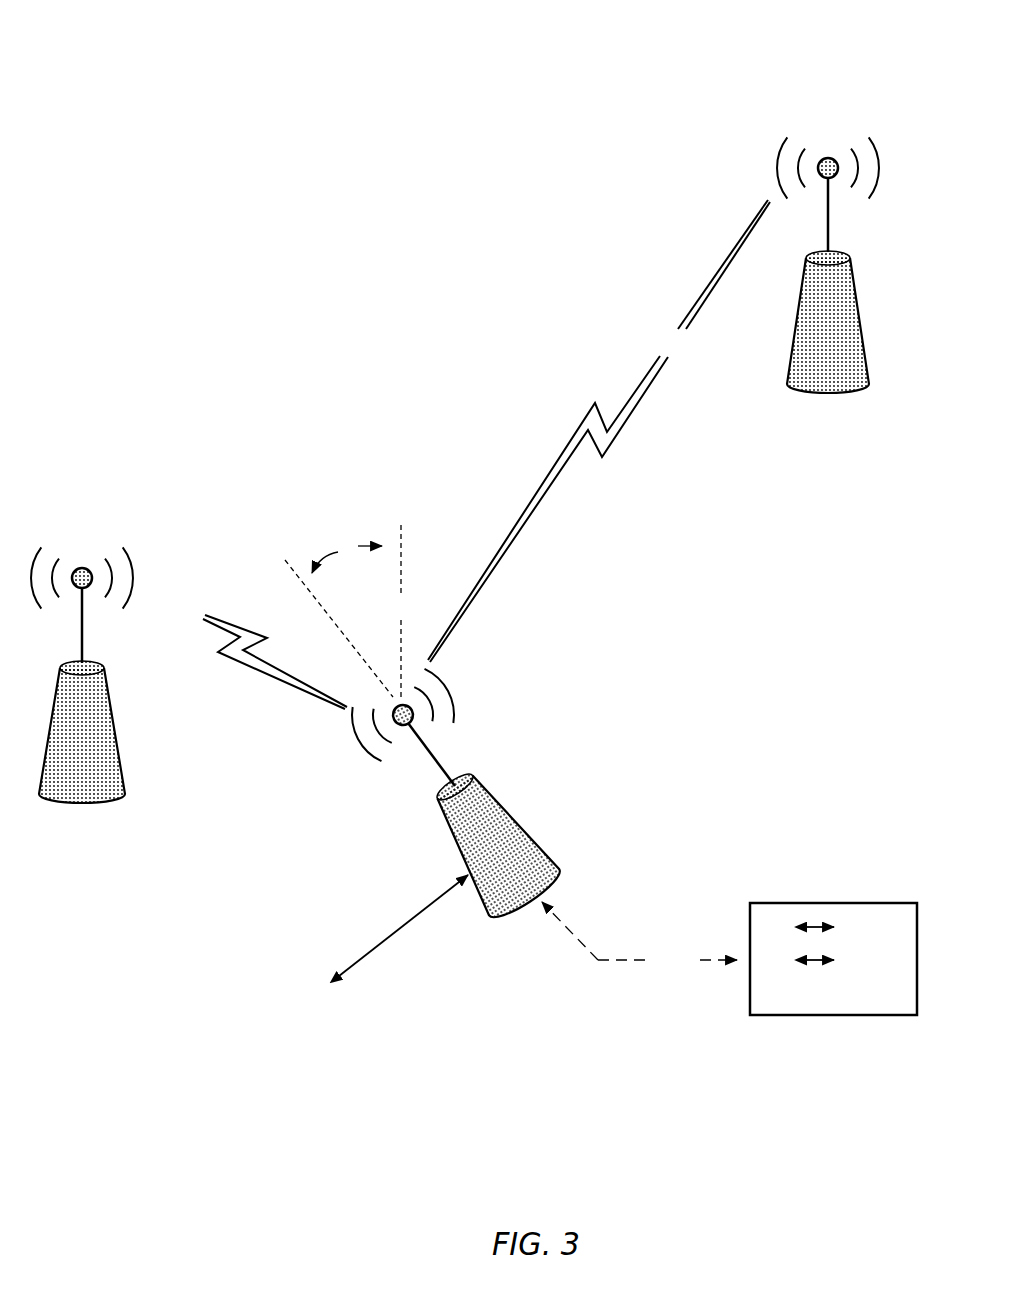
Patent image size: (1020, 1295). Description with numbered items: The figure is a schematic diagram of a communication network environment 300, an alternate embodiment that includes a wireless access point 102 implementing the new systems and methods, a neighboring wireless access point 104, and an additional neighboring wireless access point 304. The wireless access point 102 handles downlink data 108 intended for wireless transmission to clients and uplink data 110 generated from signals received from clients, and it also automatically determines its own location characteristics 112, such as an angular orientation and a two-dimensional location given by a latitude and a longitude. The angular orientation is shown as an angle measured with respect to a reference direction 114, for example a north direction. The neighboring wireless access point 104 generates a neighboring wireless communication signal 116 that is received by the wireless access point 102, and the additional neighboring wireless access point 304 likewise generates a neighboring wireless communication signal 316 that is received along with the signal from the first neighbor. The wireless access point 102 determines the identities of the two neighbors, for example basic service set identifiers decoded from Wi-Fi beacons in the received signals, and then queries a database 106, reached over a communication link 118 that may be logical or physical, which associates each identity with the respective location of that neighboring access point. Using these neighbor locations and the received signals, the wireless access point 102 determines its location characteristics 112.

The communication network environment 300 is at (89, 36).
The wireless access point 102 is at (495, 883).
The neighboring wireless access point 104 is at (818, 380).
The additional neighboring wireless access point 304 is at (70, 790).
The database 106 is at (887, 1006).
The downlink data 108 is at (384, 949).
The uplink data 110 is at (384, 949).
The location characteristics 112 is at (384, 949).
The reference direction 114 is at (400, 611).
The neighboring wireless communication signal 116 is at (599, 431).
The neighboring wireless communication signal 316 is at (142, 585).
The communication link 118 is at (639, 937).